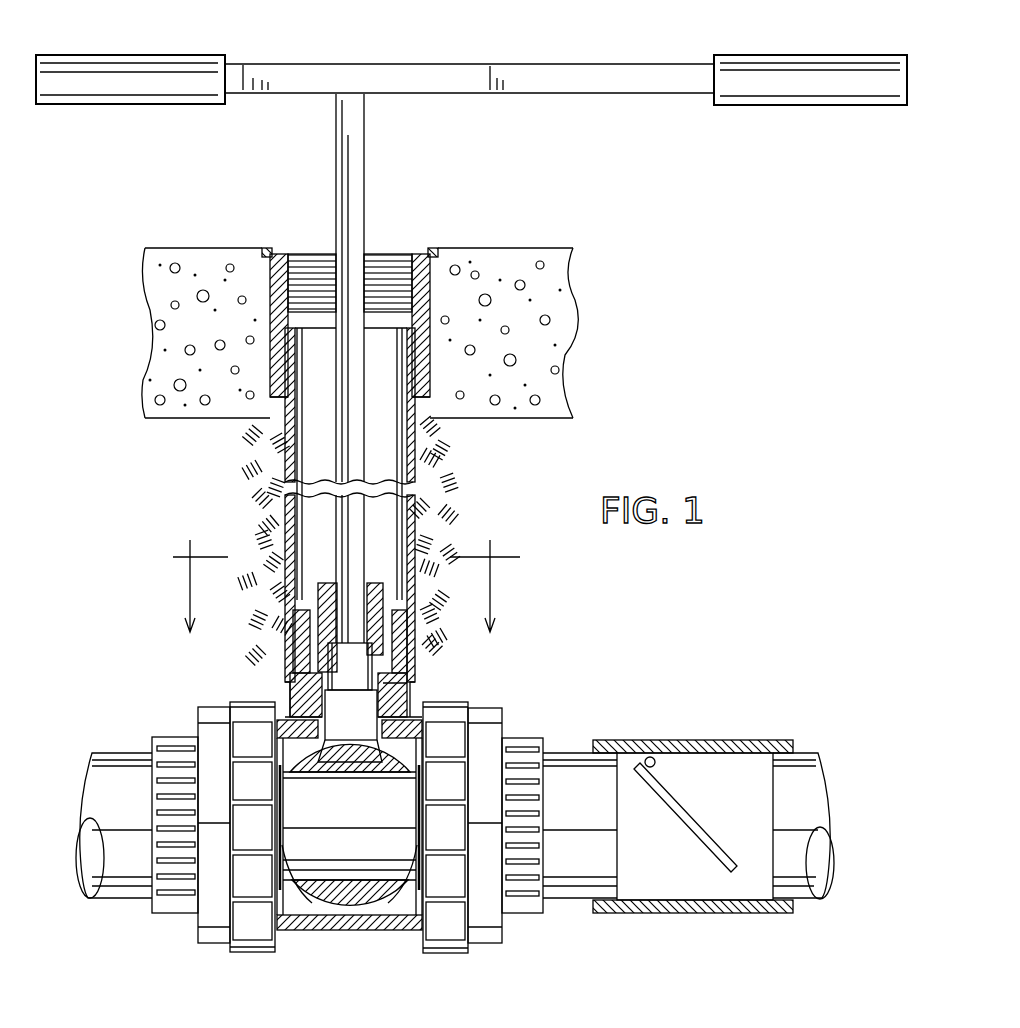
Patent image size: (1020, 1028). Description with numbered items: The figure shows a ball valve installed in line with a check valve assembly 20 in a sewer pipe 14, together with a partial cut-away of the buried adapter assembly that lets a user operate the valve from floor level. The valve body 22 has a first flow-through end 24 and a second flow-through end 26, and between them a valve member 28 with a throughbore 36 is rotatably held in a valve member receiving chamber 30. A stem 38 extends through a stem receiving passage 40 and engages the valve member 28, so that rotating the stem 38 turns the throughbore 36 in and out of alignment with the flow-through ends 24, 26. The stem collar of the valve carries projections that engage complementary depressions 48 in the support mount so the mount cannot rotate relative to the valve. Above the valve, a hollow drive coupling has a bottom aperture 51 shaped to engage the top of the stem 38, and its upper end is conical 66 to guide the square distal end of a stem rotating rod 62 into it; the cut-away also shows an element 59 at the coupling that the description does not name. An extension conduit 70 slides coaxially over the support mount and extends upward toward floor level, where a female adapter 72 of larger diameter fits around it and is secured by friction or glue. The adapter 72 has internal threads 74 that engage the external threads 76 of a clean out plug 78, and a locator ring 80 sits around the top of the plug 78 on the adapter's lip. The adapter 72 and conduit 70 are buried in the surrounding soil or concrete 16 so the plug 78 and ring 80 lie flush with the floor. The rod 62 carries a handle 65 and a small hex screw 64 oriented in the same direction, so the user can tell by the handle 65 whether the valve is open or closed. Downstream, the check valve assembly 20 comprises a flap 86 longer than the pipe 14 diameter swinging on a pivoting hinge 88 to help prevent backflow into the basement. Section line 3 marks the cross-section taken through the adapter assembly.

The handle 65 is at (588, 75).
The stem rotating rod 62 is at (357, 173).
The locator ring 80 is at (270, 248).
The internal threads 74 is at (308, 265).
The clean out plug 78 is at (320, 250).
The external threads 76 is at (383, 268).
The concrete slab 16 is at (523, 337).
The female adapter 72 is at (430, 378).
The extension conduit 70 is at (285, 455).
The conical upper end 66 is at (415, 505).
The section line 3- 3 is at (344, 573).
The coupling nut 59 is at (385, 592).
The hex shaped screw 64 is at (377, 618).
The bottom aperture 51 is at (395, 655).
The stem receiving passage 40 is at (408, 692).
The depressions 48 is at (287, 718).
The stem 38 is at (358, 724).
The valve body 22 is at (335, 925).
The throughbore 36 is at (360, 816).
The first flow-through end 24 is at (318, 850).
The second flow-through end 26 is at (400, 840).
The valve member receiving chamber 30 is at (255, 703).
The valve member 28 is at (463, 768).
The pipe 14 is at (118, 752).
The check valve assembly 20 is at (738, 729).
The flap 86 is at (690, 815).
The pivoting hinge 88 is at (665, 760).